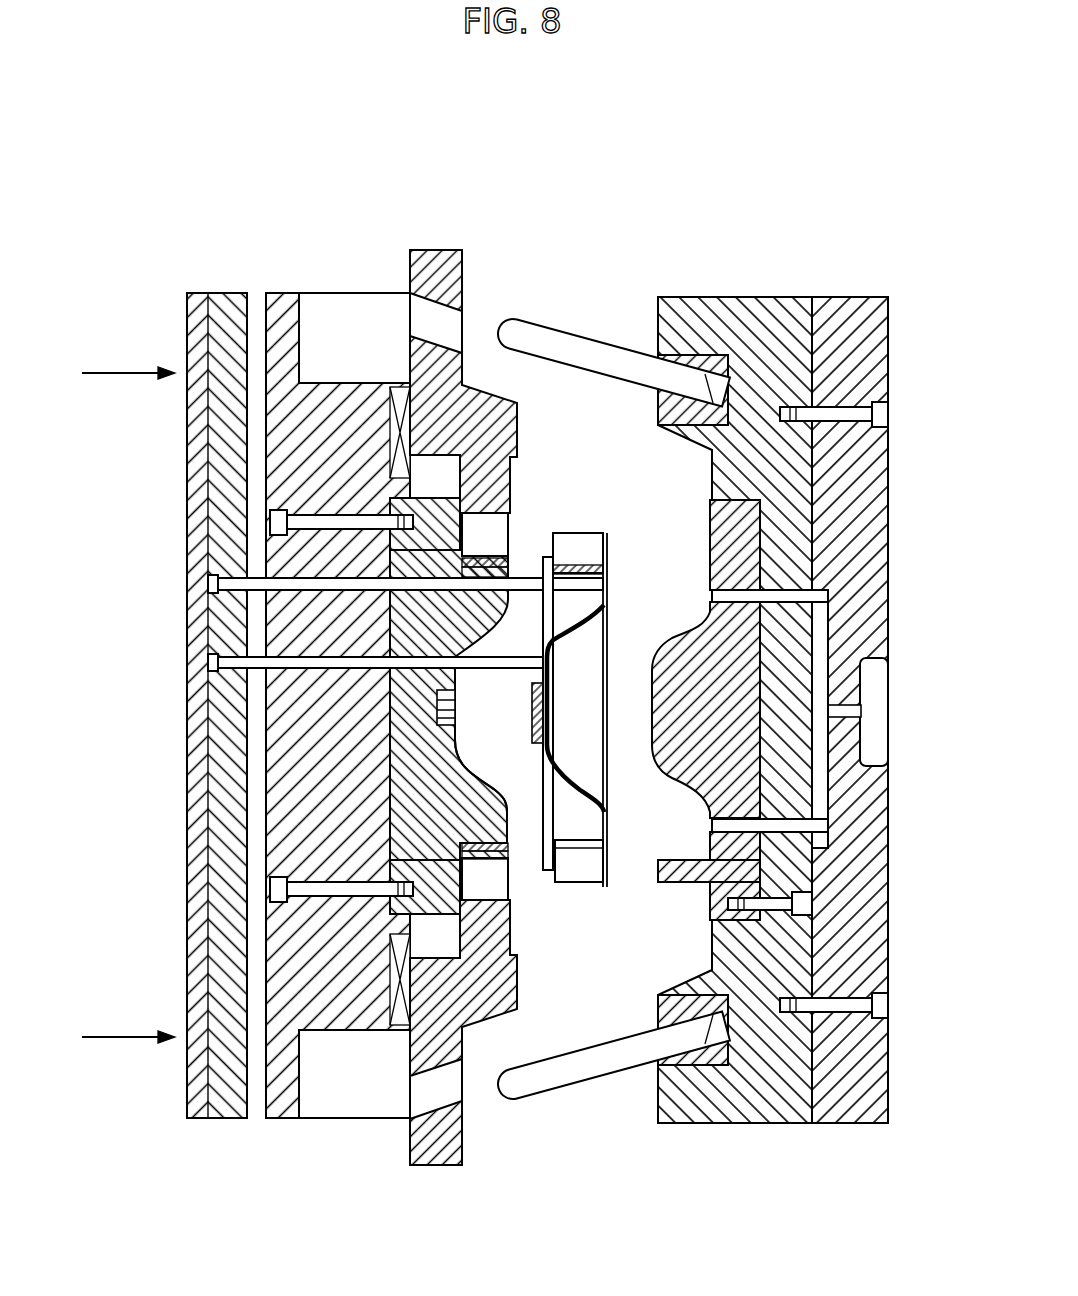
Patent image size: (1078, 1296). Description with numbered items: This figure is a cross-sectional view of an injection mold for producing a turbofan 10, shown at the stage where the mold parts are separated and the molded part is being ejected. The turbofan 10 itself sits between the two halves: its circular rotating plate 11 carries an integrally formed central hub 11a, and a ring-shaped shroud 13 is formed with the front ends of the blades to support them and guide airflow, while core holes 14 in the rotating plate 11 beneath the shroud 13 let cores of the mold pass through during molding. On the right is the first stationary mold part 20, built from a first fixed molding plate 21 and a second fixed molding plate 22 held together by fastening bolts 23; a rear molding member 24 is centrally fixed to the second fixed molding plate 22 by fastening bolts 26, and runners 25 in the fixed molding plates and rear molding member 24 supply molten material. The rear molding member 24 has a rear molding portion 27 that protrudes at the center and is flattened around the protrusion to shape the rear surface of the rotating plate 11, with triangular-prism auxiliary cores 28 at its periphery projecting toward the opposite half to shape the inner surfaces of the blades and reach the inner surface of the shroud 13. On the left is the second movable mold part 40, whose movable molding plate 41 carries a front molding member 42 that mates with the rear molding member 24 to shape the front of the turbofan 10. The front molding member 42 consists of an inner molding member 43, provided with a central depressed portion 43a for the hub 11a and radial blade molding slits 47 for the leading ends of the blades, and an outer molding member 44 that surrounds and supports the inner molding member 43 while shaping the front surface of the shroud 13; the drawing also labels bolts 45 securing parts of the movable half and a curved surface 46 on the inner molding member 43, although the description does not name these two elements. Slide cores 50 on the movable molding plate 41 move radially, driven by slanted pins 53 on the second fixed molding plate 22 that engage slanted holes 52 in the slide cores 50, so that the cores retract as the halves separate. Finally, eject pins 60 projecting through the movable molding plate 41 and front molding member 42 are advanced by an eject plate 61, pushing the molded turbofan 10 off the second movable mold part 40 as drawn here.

The turbofan 10 is at (583, 524).
The circular rotating plate 11 is at (607, 585).
The central hub 11a is at (532, 714).
The ring-shaped shroud 13 is at (553, 542).
The core holes 14 is at (606, 885).
The first stationary mold part 20 is at (788, 245).
The first fixed molding plate 21 is at (835, 297).
The second fixed molding plate 22 is at (712, 297).
The fastening bolts 23 is at (877, 407).
The rear molding member 24 is at (698, 710).
The runners 25 is at (828, 598).
The fastening bolts 26 is at (800, 906).
The rear molding portion 27 is at (668, 648).
The auxiliary cores 28 is at (670, 882).
The second movable mold part 40 is at (369, 240).
The movable molding plate 41 is at (318, 395).
The front molding member 42 is at (482, 883).
The inner molding member 43 is at (318, 705).
The depressed portion 43a is at (437, 705).
The outer molding member 44 is at (460, 940).
The fixing bolt 45 is at (305, 895).
The core curved surface 46 is at (470, 783).
The blade molding slits 47 is at (487, 855).
The slide cores 50 is at (488, 714).
The slanted holes 52 is at (455, 318).
The slanted pins 53 is at (582, 345).
The eject pins 60 is at (258, 586).
The eject plate 61 is at (218, 722).